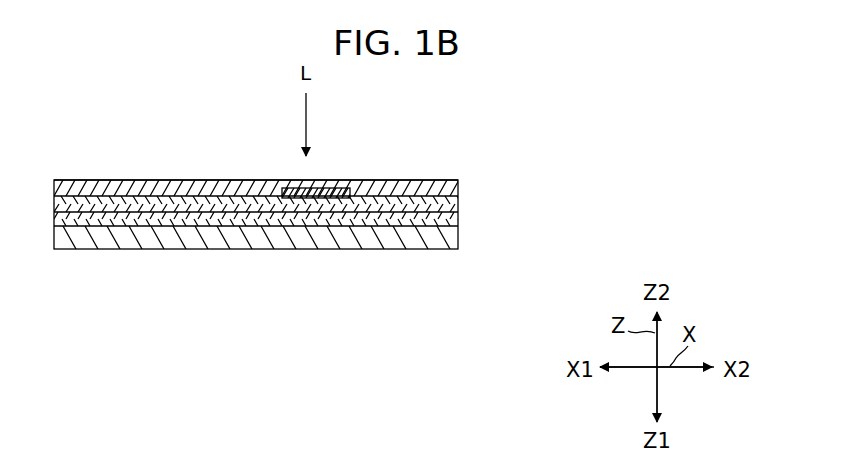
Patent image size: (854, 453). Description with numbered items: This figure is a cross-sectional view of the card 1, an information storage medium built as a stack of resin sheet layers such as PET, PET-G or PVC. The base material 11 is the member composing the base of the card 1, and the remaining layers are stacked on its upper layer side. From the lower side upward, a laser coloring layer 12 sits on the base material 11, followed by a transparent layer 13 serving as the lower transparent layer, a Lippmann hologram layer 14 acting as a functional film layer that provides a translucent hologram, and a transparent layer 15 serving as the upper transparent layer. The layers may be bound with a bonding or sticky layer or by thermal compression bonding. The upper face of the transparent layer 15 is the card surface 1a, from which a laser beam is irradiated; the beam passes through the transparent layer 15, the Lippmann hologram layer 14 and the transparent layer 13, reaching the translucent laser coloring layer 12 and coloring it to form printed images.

The card 1 is at (66, 156).
The card surface 1a is at (128, 180).
The base material 11 is at (456, 238).
The laser coloring layer 12 is at (456, 218).
The transparent layer 13 is at (455, 203).
The Lippmann hologram layer 14 is at (338, 190).
The transparent layer 15 is at (456, 182).